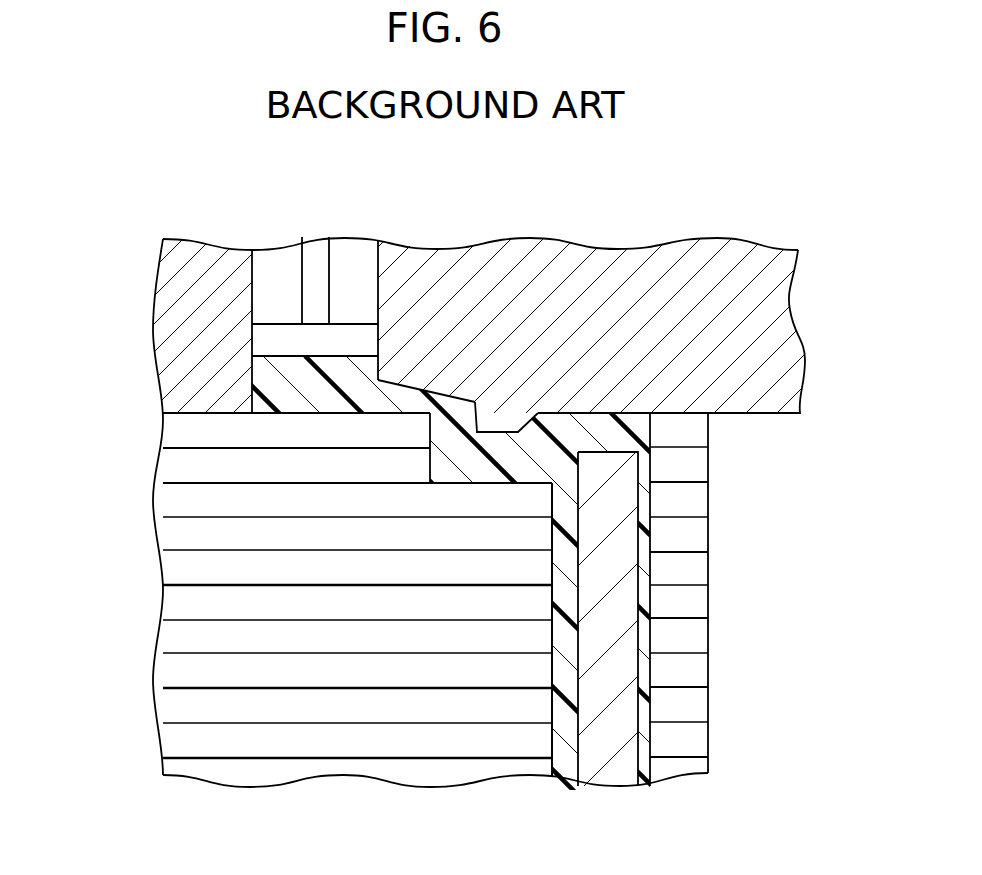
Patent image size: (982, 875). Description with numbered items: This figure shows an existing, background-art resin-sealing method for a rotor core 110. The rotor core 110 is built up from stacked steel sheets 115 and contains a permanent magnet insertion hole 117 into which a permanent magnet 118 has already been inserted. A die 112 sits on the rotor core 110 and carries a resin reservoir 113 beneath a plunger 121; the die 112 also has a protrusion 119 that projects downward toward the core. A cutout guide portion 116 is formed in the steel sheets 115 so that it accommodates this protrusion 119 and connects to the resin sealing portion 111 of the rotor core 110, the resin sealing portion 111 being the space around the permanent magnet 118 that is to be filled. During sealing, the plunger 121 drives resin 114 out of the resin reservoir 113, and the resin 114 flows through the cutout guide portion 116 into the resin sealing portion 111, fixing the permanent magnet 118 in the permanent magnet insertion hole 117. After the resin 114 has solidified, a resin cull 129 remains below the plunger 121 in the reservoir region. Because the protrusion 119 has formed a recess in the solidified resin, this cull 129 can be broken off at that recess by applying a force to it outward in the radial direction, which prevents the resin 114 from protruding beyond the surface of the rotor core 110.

The rotor core 110 is at (715, 564).
The resin sealing portion 111 is at (565, 643).
The die 112 is at (653, 240).
The resin reservoir 113 is at (275, 372).
The resin 114 is at (453, 462).
The steel sheets 115 is at (698, 432).
The cutout guide portion 116 is at (513, 463).
The permanent magnet insertion hole 117 is at (565, 705).
The permanent magnet 118 is at (623, 642).
The protrusion 119 is at (510, 428).
The plunger 121 is at (313, 255).
The resin (cull) 129 is at (287, 398).